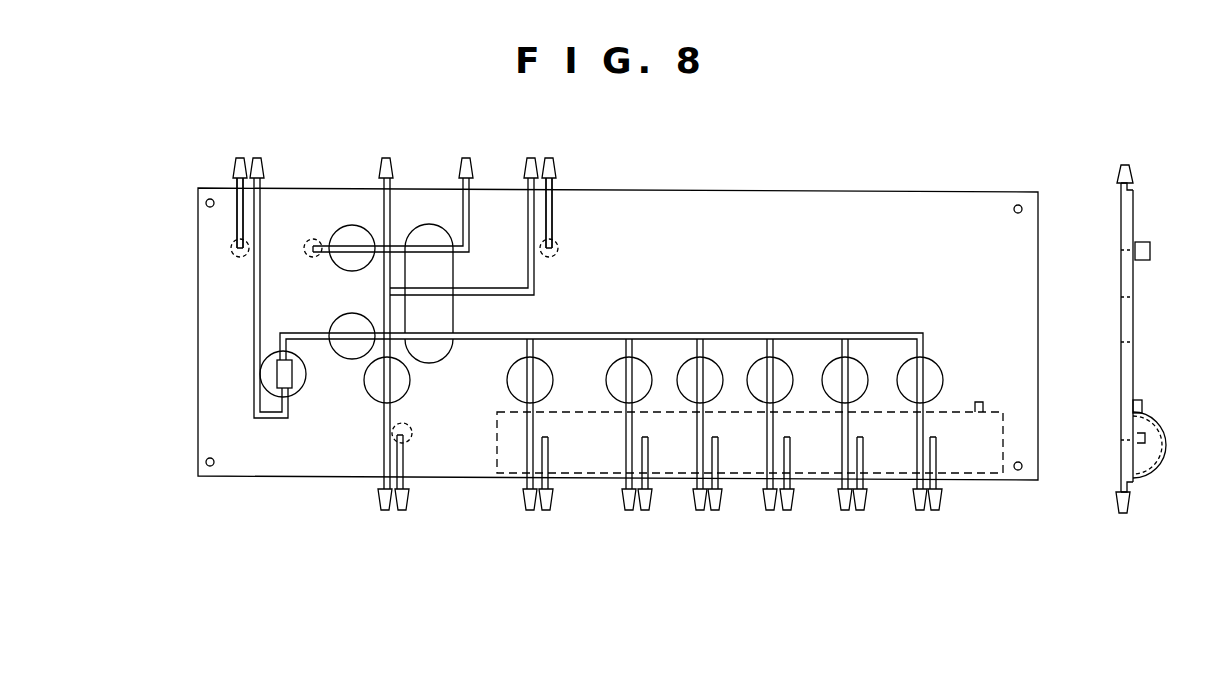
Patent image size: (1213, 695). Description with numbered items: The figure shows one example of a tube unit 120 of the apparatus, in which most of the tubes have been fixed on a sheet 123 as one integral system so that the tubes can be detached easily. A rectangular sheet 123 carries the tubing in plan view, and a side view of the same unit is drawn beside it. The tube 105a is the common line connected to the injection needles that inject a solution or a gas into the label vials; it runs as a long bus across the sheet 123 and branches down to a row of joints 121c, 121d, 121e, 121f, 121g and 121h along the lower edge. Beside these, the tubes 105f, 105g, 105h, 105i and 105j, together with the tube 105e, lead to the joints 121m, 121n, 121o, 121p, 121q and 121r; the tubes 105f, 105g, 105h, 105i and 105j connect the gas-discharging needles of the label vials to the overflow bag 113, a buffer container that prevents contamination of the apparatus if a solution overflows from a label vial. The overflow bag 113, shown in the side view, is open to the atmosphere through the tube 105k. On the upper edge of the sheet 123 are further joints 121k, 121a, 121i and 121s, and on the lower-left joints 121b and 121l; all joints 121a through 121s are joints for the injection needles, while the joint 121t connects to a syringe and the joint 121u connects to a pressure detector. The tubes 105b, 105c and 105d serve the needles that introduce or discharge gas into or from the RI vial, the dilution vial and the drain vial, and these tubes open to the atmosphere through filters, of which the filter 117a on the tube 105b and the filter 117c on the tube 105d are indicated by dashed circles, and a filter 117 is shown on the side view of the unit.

The tube unit 120 is at (904, 184).
The sheet 123 is at (722, 189).
The overflow bag 113 is at (1161, 470).
The filter 117 is at (1150, 250).
The filter 117a is at (231, 249).
The filter 117c is at (412, 431).
The tube 105a is at (345, 330).
The tube 105b is at (236, 216).
The tube 105c is at (553, 215).
The tube 105d is at (403, 450).
The tube 105e is at (548, 440).
The tube 105f is at (648, 440).
The tube 105g is at (718, 440).
The tube 105h is at (790, 440).
The tube 105i is at (863, 440).
The tube 105j is at (936, 440).
The tube 105k is at (1142, 406).
The joint 121a is at (271, 143).
The joint 121b is at (383, 510).
The joint 121c is at (530, 511).
The joint 121d is at (629, 511).
The joint 121e is at (700, 511).
The joint 121f is at (770, 511).
The joint 121g is at (845, 511).
The joint 121h is at (920, 511).
The joint 121i is at (531, 157).
The joint 121k is at (236, 157).
The joint 121l is at (404, 510).
The joint 121m is at (548, 511).
The joint 121n is at (646, 511).
The joint 121o is at (716, 511).
The joint 121p is at (788, 511).
The joint 121q is at (861, 511).
The joint 121r is at (936, 511).
The joint 121s is at (591, 142).
The joint 121t is at (387, 157).
The joint 121u is at (466, 157).